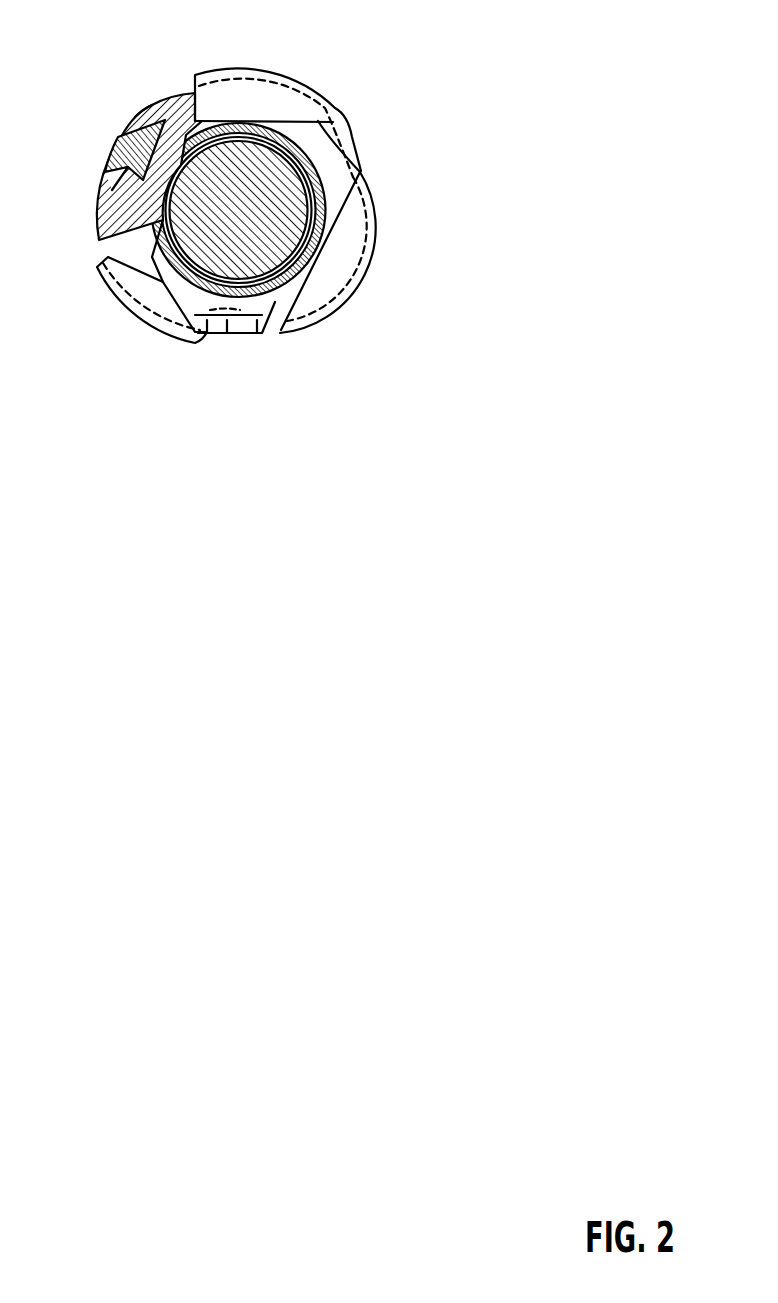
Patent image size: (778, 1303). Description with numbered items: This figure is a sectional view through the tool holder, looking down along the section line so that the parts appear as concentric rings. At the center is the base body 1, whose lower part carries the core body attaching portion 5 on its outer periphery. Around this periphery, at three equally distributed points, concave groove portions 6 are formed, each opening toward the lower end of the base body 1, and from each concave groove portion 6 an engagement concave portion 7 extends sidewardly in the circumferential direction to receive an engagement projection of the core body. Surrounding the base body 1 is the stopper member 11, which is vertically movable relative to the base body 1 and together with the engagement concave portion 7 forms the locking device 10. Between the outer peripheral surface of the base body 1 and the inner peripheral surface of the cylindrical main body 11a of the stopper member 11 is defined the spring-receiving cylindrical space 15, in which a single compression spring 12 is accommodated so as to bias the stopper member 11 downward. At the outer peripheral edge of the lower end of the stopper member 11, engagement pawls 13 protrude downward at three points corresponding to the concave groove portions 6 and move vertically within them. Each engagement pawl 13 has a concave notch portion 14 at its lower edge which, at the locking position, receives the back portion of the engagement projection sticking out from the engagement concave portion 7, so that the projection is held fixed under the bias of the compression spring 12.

The base body 1 is at (200, 252).
The core body attaching portion 5 is at (100, 240).
The concave groove portion 6 is at (152, 105).
The engagement concave portion 7 is at (100, 189).
The locking device 10 is at (363, 131).
The stopper member 11 is at (282, 120).
The cylindrical main body 11a is at (236, 119).
The compression spring 12 is at (330, 117).
The engagement pawl 13 is at (107, 128).
The concave notch portion 14 is at (110, 160).
The spring-receiving cylindrical space 15 is at (321, 237).